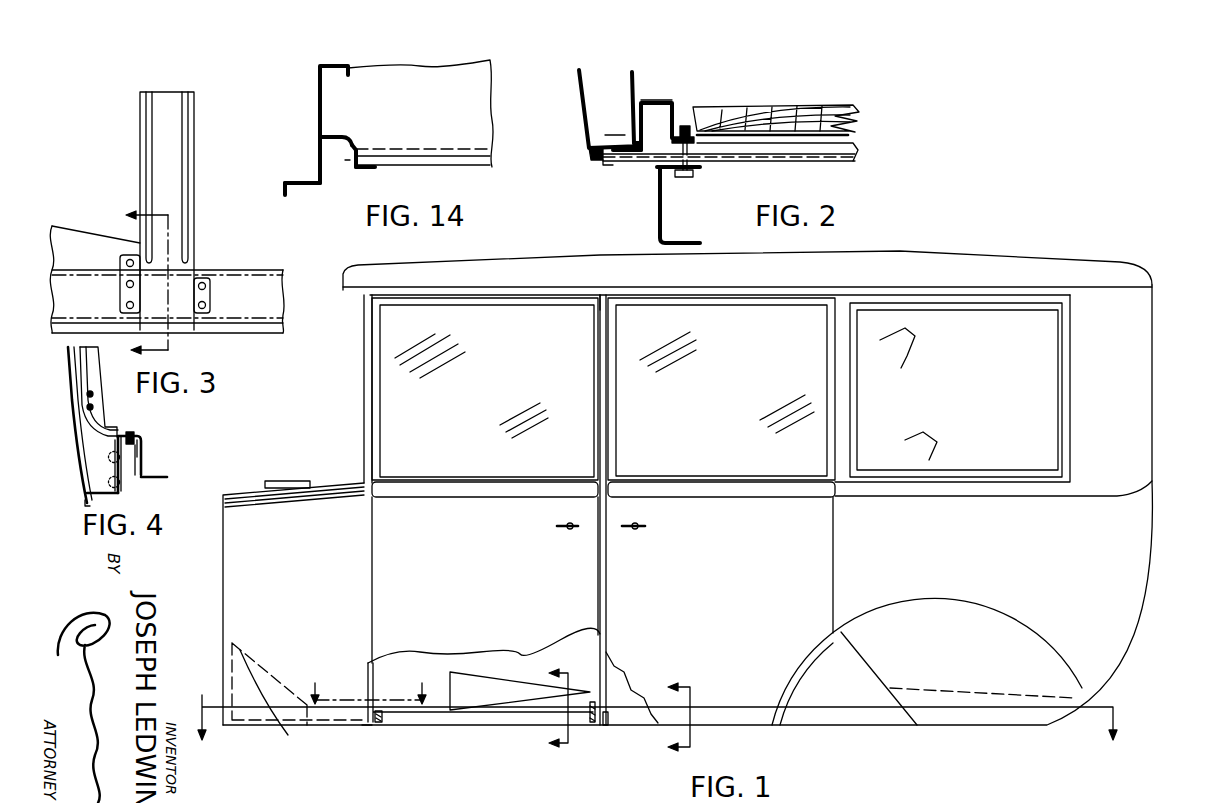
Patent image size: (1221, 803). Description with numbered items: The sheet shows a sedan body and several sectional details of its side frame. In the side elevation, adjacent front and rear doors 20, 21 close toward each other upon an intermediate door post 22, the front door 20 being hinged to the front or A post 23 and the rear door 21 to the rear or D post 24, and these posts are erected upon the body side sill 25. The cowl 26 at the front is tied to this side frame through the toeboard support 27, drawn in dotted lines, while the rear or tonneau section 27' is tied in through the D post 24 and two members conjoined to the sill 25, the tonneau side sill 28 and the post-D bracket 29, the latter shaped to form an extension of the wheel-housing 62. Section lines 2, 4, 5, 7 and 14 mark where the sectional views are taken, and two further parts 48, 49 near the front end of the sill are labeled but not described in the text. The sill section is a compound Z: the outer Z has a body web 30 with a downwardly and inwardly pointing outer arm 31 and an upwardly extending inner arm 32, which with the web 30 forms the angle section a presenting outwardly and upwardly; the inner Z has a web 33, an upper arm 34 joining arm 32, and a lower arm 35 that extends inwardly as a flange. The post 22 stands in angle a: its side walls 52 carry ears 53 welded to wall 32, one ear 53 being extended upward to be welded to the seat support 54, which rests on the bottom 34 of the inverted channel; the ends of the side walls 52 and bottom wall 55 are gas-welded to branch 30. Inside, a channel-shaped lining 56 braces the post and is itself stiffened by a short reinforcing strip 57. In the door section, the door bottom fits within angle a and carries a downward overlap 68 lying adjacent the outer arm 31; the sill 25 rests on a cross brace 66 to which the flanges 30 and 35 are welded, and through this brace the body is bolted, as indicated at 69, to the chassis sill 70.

In FIG. 1, the section line 2— 2 is at (674, 717).
In FIG. 3, the section line 4— 4 is at (133, 289).
In FIG. 1, the section line 5— 5 is at (657, 738).
In FIG. 1, the section line 7- 7 is at (363, 682).
In FIG. 1, the section line 14— 14 is at (565, 715).
In FIG. 1, the front door 20 is at (484, 480).
In FIG. 1, the rear door 21 is at (720, 511).
In FIG. 2, the rear door 21 is at (600, 98).
In FIG. 1, the intermediate door post 22 is at (603, 305).
In FIG. 3, the intermediate door post 22 is at (172, 160).
In FIG. 4, the intermediate door post 22 is at (67, 357).
In FIG. 1, the front post 23 is at (365, 388).
In FIG. 1, the rear post 24 is at (852, 308).
In FIG. 1, the body side sill 25 is at (490, 718).
In FIG. 14, the body side sill 25 is at (346, 181).
In FIG. 2, the body side sill 25 is at (658, 126).
In FIG. 1, the cowl 26 is at (293, 603).
In FIG. 1, the toeboard support 27 is at (274, 707).
In FIG. 1, the tonneau section of the body 27' is at (715, 505).
In FIG. 1, the tonneau side sill 28 is at (973, 693).
In FIG. 1, the post-D bracket 29 is at (825, 690).
In FIG. 4, the body web of outer Z 30 is at (129, 476).
In FIG. 14, the body web of outer Z 30 is at (307, 181).
In FIG. 2, the body web of outer Z 30 is at (623, 153).
In FIG. 3, the outer arm of outer Z 31 is at (247, 327).
In FIG. 4, the outer arm of outer Z 31 is at (87, 503).
In FIG. 14, the outer arm of outer Z 31 is at (287, 198).
In FIG. 2, the outer arm of outer Z 31 is at (600, 163).
In FIG. 3, the inner arm of outer Z 32 is at (257, 297).
In FIG. 4, the inner arm of outer Z 32 is at (124, 468).
In FIG. 14, the inner arm of outer Z 32 is at (318, 163).
In FIG. 2, the inner arm of outer Z 32 is at (647, 105).
In FIG. 4, the web of inner Z 33 is at (146, 472).
In FIG. 14, the web of inner Z 33 is at (354, 143).
In FIG. 2, the web of inner Z 33 is at (686, 125).
In FIG. 3, the upper arm of inner Z 34 is at (258, 271).
In FIG. 4, the upper arm of inner Z 34 is at (140, 455).
In FIG. 14, the upper arm of inner Z 34 is at (337, 140).
In FIG. 2, the upper arm of inner Z 34 is at (667, 102).
In FIG. 4, the lower arm of inner Z 35 is at (163, 480).
In FIG. 14, the lower arm of inner Z 35 is at (363, 170).
In FIG. 2, the lower arm of inner Z 35 is at (775, 150).
In FIG. 1, the bracket 48 is at (382, 713).
In FIG. 1, the cowl sill joint 49 is at (362, 727).
In FIG. 4, the side walls of post 52 is at (97, 443).
In FIG. 1, the lateral flanges or ears 53 is at (597, 727).
In FIG. 3, the lateral flanges or ears 53 is at (205, 287).
In FIG. 4, the lateral flanges or ears 53 is at (122, 432).
In FIG. 1, the seat support 54 is at (485, 700).
In FIG. 3, the seat support 54 is at (80, 245).
In FIG. 14, the seat support 54 is at (318, 100).
In FIG. 4, the bottom wall of post 55 is at (72, 440).
In FIG. 4, the lining 56 is at (80, 372).
In FIG. 4, the reinforcing strip 57 is at (97, 418).
In FIG. 1, the wheel-housing 62 is at (972, 605).
In FIG. 14, the cross brace 66 is at (460, 158).
In FIG. 2, the cross brace 66 is at (727, 155).
In FIG. 2, the downwardly extending overlap 68 is at (589, 155).
In FIG. 2, the bolt connection 69 is at (717, 122).
In FIG. 2, the chassis sill 70 is at (663, 218).
In FIG. 2, the angle section a is at (610, 150).